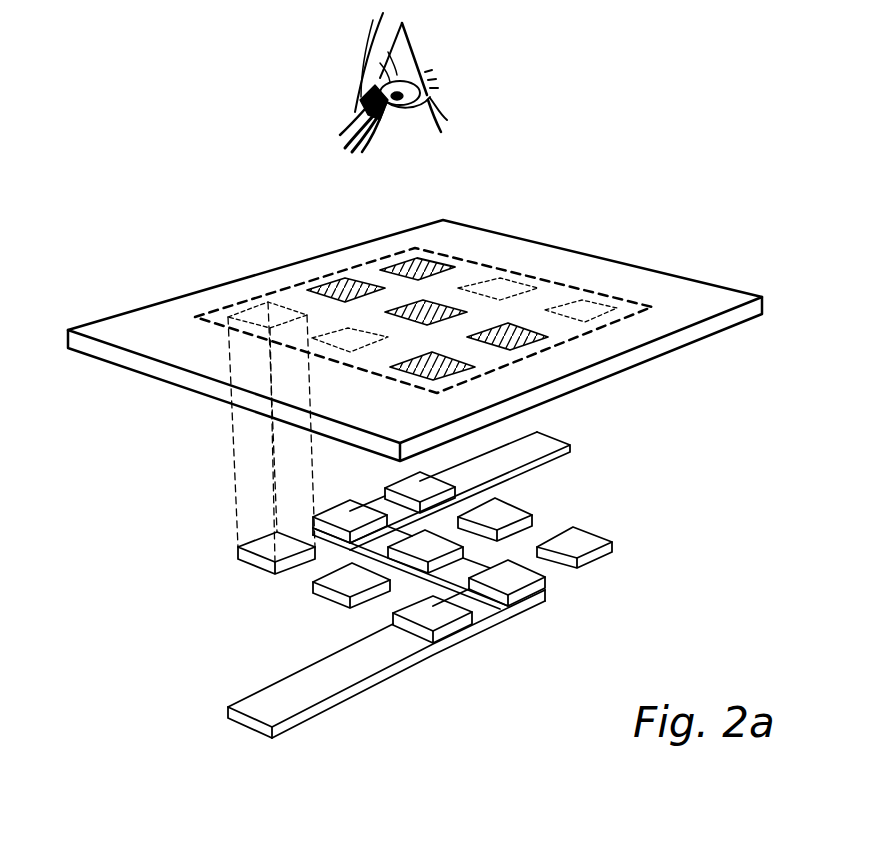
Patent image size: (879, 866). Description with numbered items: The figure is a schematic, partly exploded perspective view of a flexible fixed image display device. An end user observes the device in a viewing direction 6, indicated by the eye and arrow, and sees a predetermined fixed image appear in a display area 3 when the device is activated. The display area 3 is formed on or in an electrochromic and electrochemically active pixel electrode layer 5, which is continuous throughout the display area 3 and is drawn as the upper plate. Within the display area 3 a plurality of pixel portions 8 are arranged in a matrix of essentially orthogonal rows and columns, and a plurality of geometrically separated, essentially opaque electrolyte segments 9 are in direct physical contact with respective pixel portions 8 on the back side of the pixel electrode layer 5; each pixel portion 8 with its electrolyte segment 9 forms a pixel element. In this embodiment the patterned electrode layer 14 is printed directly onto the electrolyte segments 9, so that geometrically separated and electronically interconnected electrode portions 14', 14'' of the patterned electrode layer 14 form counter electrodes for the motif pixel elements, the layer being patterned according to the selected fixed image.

The display area 3 is at (567, 334).
The pixel electrode layer 5 is at (142, 327).
The viewing direction 6 is at (398, 118).
The pixel portion 8 is at (260, 312).
The electrolyte segment 9 is at (263, 548).
The patterned electrode layer 14 is at (410, 664).
The electrode portion 14' is at (476, 535).
The cross conductor strip 14'' is at (446, 626).